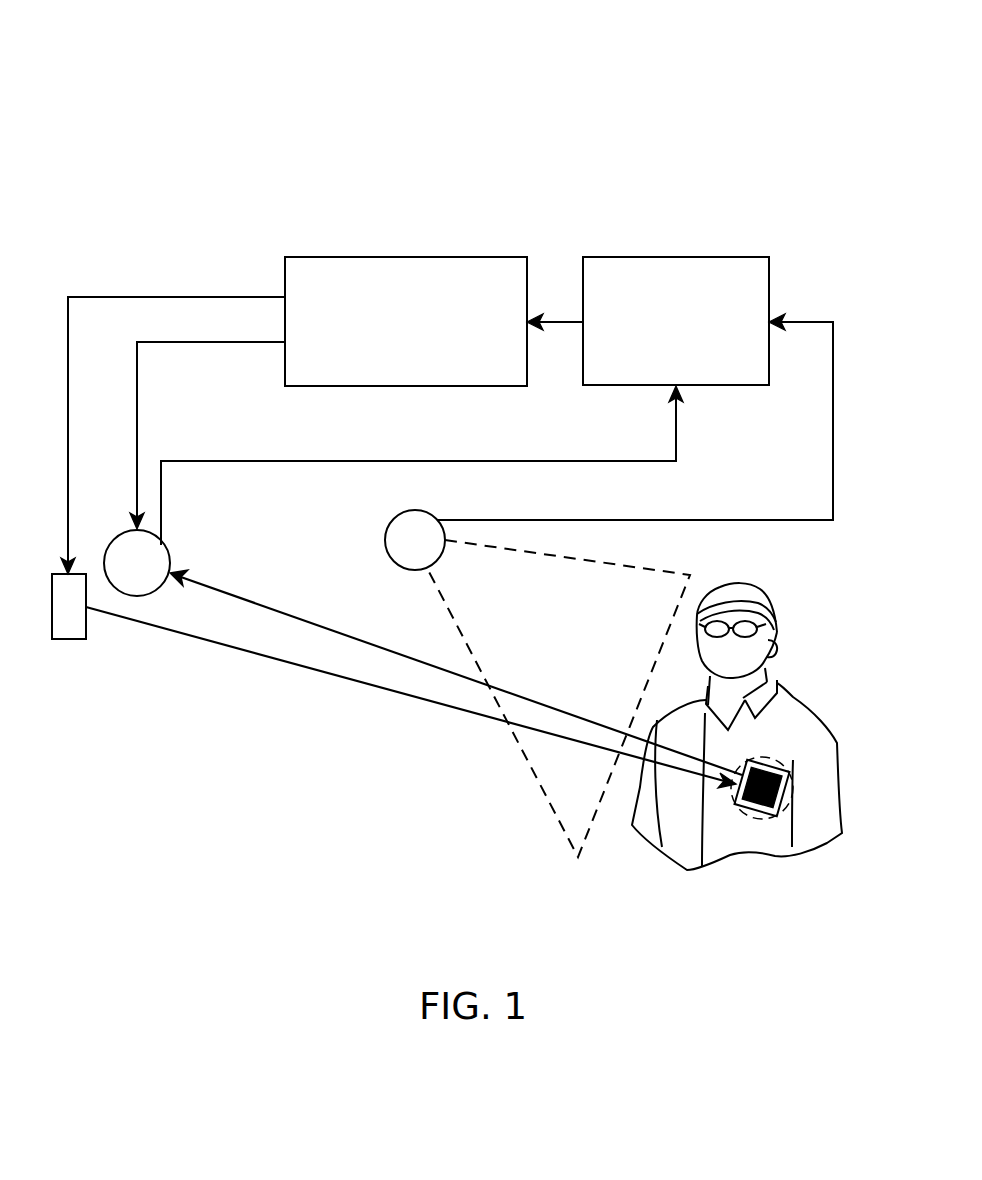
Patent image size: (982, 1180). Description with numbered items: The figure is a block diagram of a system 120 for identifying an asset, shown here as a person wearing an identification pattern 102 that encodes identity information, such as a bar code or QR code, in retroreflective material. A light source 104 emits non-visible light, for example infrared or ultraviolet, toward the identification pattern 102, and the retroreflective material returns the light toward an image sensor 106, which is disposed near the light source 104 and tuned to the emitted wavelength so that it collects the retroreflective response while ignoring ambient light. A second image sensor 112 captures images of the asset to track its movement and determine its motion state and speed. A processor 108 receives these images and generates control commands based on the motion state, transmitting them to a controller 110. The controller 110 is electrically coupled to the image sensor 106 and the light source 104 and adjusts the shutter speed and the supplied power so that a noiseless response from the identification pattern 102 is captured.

The system 120 is at (755, 62).
The controller 110 is at (406, 257).
The processor 108 is at (676, 257).
The image sensor 106 is at (170, 550).
The light source 104 is at (68, 639).
The second image sensor 112 is at (386, 537).
The identification pattern 102 is at (777, 759).